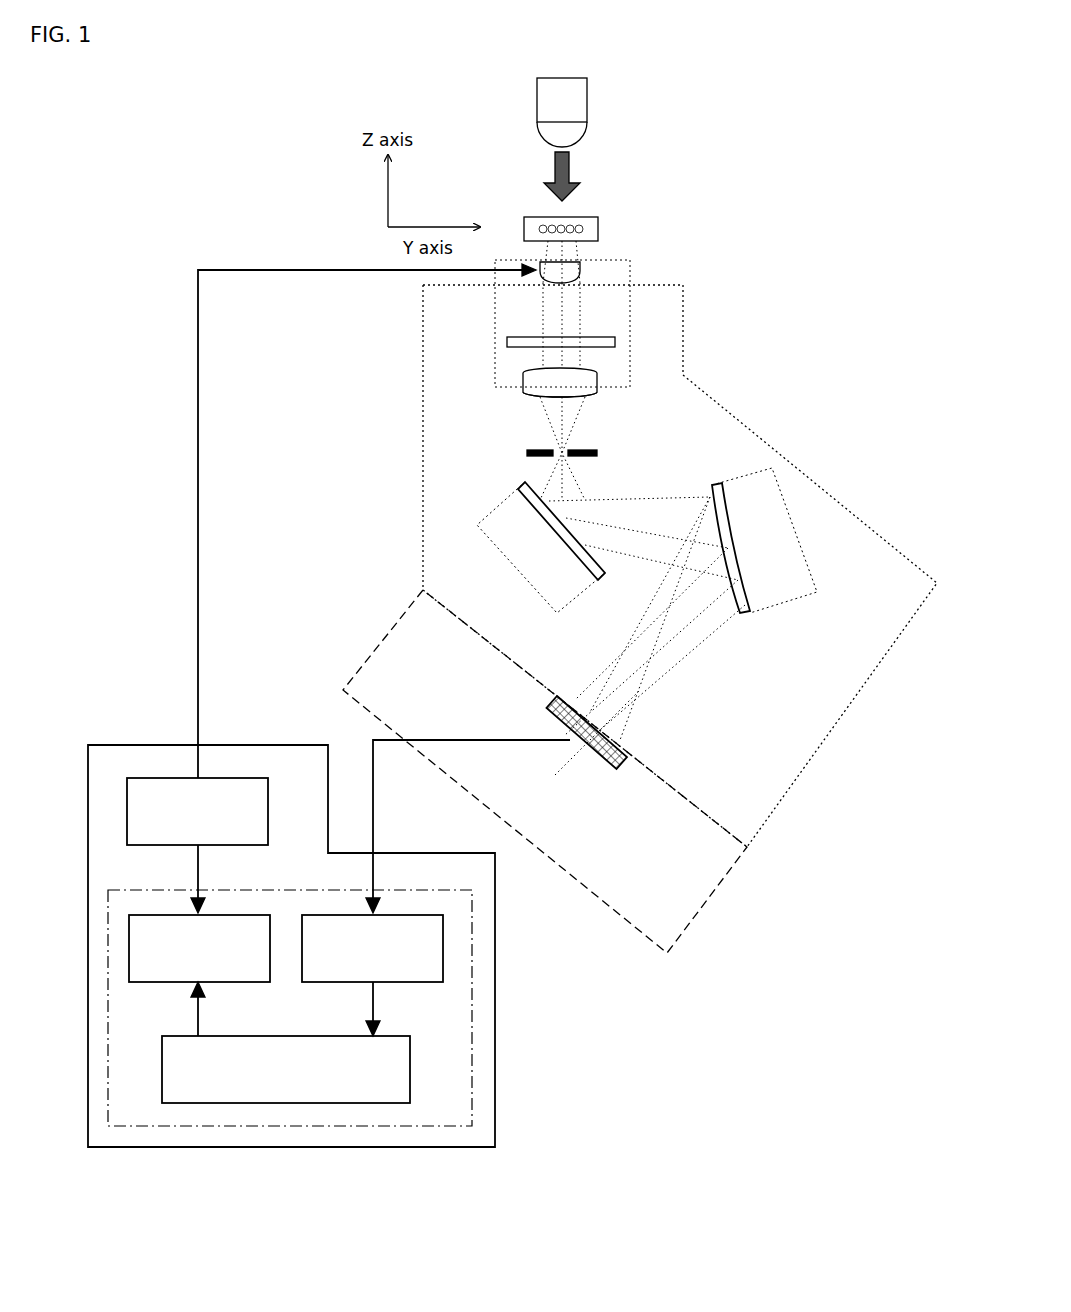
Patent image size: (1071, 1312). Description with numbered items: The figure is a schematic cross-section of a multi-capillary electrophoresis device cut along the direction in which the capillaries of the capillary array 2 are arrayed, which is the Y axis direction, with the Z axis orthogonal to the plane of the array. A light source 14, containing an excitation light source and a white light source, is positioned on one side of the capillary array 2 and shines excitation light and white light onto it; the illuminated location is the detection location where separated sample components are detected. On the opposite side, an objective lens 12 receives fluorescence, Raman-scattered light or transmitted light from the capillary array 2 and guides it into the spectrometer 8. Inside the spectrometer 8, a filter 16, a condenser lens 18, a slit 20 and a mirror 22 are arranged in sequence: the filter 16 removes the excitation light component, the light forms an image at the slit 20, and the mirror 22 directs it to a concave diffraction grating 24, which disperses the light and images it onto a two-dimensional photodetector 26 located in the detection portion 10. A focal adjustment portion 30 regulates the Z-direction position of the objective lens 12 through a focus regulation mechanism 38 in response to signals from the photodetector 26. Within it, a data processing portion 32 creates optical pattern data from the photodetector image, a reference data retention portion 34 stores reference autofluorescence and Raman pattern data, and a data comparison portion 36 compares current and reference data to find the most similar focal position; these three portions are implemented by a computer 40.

The capillary array 2 is at (592, 221).
The spectrometer 8 is at (755, 432).
The detection portion 10 is at (723, 890).
The objective lens 12 is at (580, 268).
The light source 14 is at (590, 96).
The filter 16 is at (615, 341).
The condenser lens 18 is at (598, 381).
The slit 20 is at (598, 453).
The mirror 22 is at (525, 482).
The diffraction grating 24 is at (752, 614).
The 2D photodetector 26 is at (625, 748).
The focal adjustment portion 30 is at (143, 745).
The data processing portion 32 is at (445, 937).
The reference data retention portion 34 is at (410, 1055).
The data comparison portion 36 is at (128, 938).
The focus regulation mechanism 38 is at (250, 778).
The computer 40 is at (408, 1130).